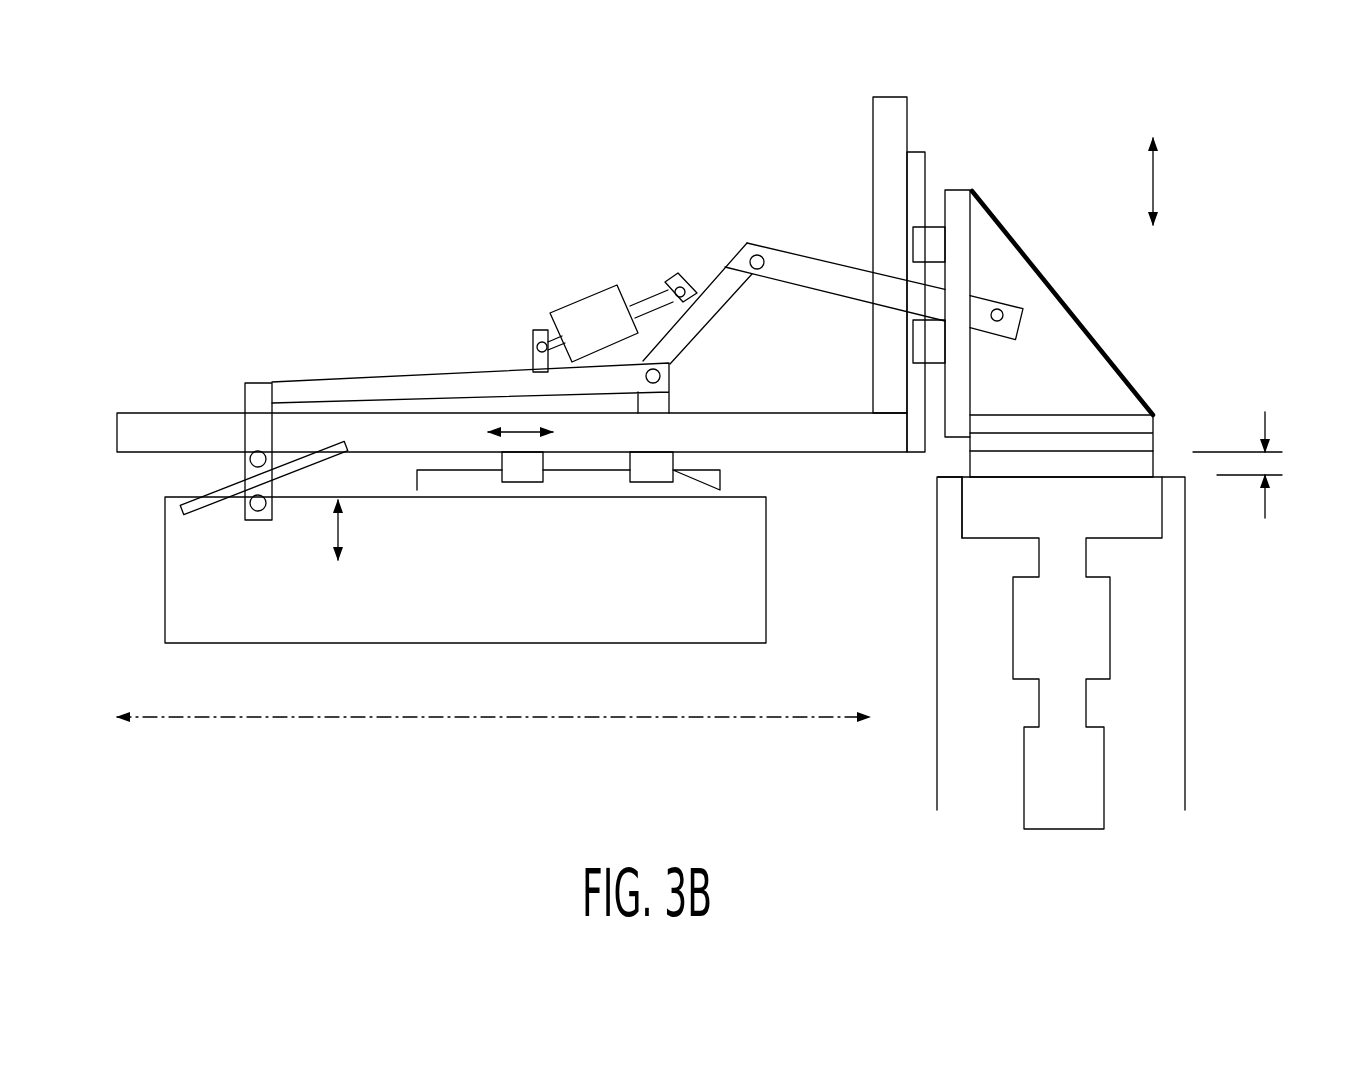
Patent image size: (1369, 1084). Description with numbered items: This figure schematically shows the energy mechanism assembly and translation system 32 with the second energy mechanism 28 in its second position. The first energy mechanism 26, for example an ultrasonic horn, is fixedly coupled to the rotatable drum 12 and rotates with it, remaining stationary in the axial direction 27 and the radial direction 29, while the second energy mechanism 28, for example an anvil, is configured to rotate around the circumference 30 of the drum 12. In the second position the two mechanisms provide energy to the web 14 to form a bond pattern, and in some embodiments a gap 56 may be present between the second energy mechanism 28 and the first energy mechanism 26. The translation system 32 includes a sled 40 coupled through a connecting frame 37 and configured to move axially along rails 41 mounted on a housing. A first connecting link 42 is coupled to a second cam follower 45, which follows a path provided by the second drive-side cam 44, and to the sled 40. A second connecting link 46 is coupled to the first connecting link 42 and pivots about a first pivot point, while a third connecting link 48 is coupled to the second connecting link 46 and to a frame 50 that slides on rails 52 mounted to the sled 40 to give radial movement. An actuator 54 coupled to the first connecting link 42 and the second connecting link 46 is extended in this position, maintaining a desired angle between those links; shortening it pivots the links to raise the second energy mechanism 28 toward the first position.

The rotatable drum 12 is at (960, 785).
The web 14 is at (1140, 462).
The first energy mechanism 26 is at (1035, 628).
The axial direction 27 is at (707, 718).
The second energy mechanism 28 is at (1140, 442).
The radial direction 29 is at (1153, 182).
The circumference 30 is at (948, 470).
The translation system 32 is at (148, 253).
The connecting frame 37 is at (143, 427).
The sled 40 is at (885, 130).
The rails 41 is at (715, 482).
The first connecting link 42 is at (318, 393).
The second drive-side cam 44 is at (233, 485).
The second cam follower 45 is at (745, 583).
The second connecting link 46 is at (705, 322).
The third connecting link 48 is at (838, 268).
The frame 50 is at (955, 202).
The rails 52 is at (917, 175).
The actuator 54 is at (604, 322).
The gap 56 is at (1265, 422).